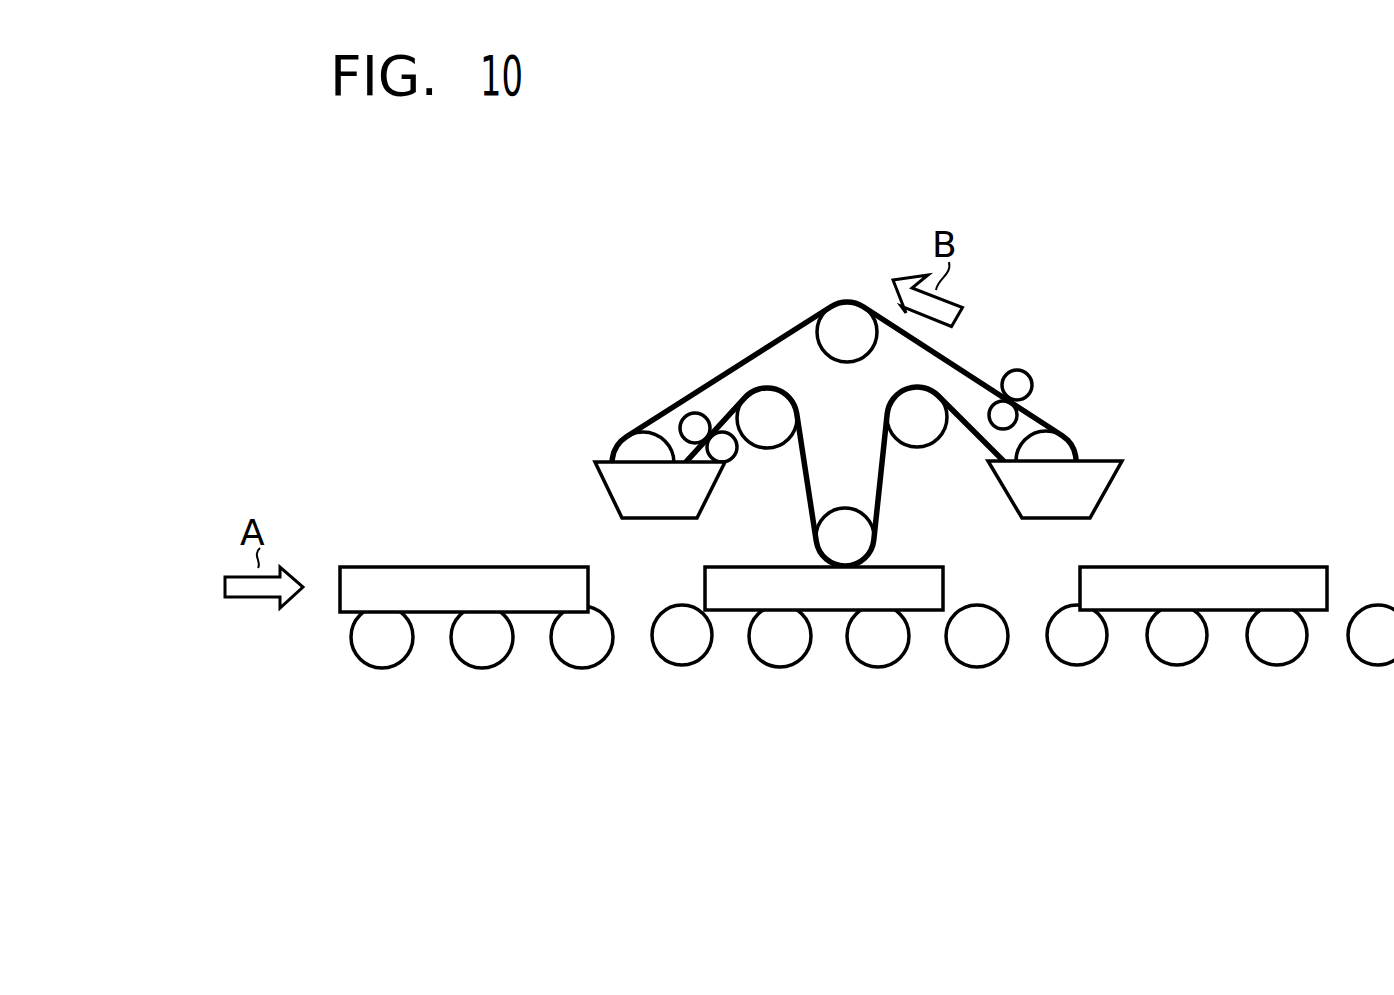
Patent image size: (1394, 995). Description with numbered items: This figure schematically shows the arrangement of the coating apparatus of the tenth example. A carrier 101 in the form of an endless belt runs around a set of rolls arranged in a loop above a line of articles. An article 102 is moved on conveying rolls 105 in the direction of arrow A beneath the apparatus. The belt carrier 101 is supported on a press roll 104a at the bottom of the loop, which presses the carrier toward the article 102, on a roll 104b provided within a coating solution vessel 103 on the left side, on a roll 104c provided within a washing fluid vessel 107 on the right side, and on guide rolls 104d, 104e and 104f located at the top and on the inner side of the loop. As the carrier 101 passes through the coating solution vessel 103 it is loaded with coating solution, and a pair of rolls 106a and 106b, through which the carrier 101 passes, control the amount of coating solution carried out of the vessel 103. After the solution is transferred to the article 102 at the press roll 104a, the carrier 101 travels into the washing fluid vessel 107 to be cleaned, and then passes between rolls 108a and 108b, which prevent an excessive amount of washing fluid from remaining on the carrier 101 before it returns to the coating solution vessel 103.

The carrier 101 is at (803, 490).
The article 102 is at (432, 583).
The coating solution vessel 103 is at (628, 502).
The press roll 104a is at (853, 534).
The roll 104b is at (627, 450).
The roll 104c is at (1056, 448).
The guide roll 104d is at (846, 333).
The guide roll 104e is at (916, 418).
The guide roll 104f is at (769, 415).
The conveying roll 105 is at (680, 658).
The roll 106a is at (694, 428).
The roll 106b is at (722, 447).
The washing fluid vessel 107 is at (1092, 492).
The roll 108a is at (1017, 385).
The roll 108b is at (1003, 415).